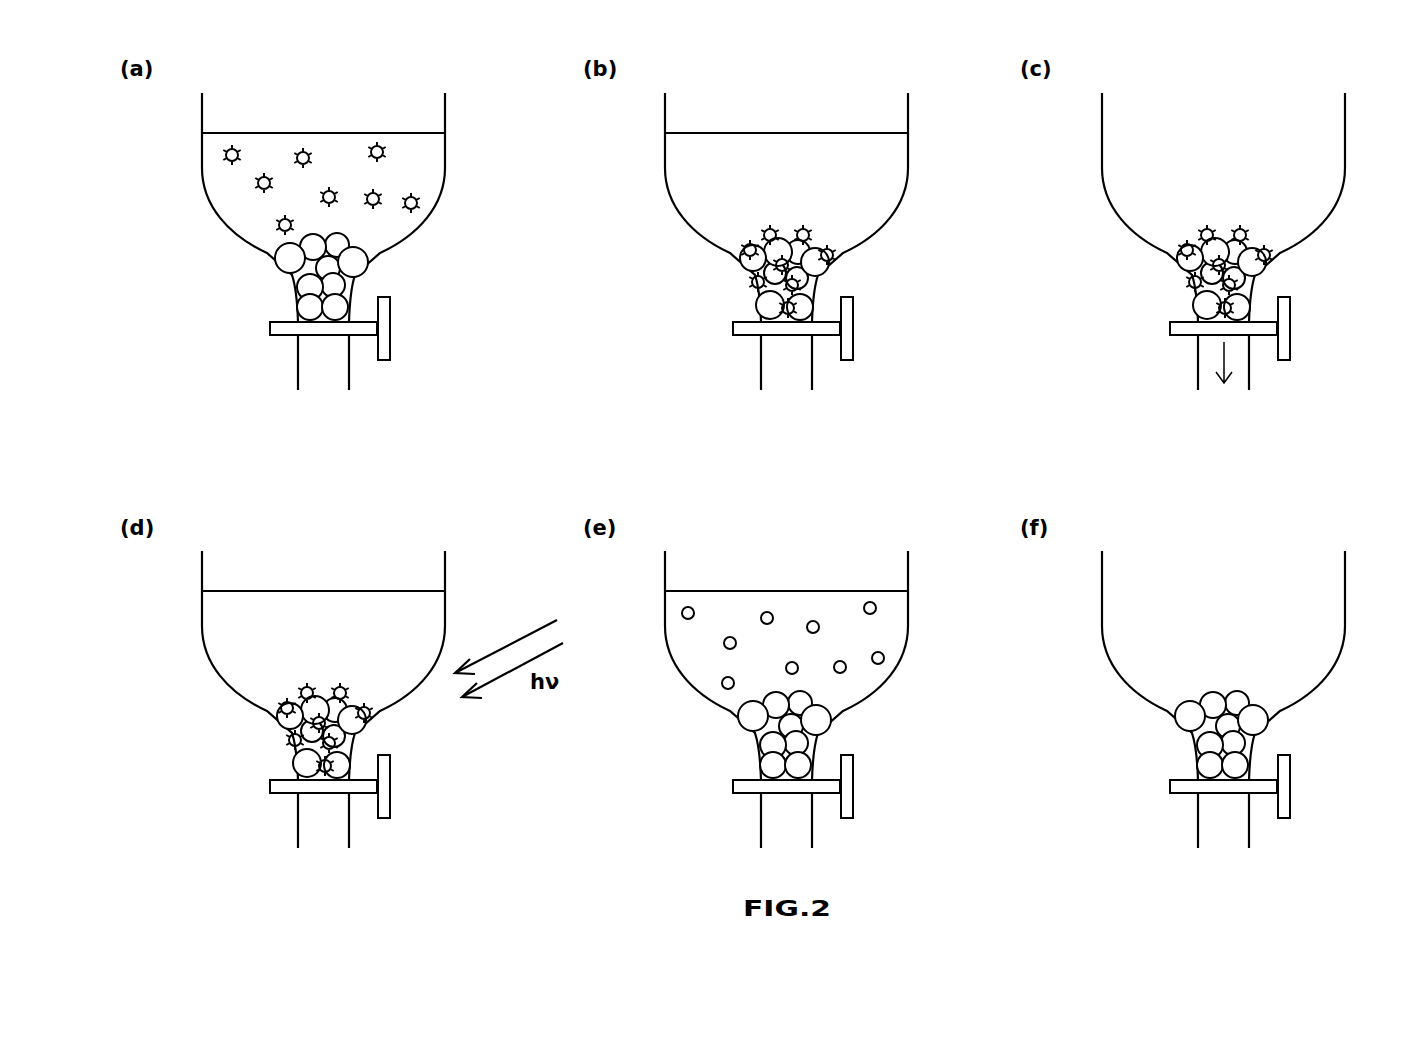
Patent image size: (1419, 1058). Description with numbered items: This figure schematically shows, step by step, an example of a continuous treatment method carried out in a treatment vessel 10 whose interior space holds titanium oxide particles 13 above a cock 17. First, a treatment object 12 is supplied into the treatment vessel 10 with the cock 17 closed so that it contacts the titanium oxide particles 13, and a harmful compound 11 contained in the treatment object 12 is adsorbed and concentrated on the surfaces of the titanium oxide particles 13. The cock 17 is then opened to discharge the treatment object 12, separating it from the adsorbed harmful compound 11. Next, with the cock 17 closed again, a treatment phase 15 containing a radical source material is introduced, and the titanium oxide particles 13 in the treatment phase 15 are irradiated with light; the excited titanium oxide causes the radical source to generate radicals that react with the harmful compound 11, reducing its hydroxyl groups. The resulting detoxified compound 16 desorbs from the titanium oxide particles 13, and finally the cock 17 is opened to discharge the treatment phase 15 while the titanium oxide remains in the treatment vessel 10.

The treatment vessel 10 is at (445, 168).
The harmful compound 11 is at (222, 155).
The treatment object 12 is at (230, 207).
The titanium oxide particles 13 is at (292, 258).
The treatment phase 15 is at (527, 629).
The detoxified compound 16 is at (831, 653).
The cock 17 is at (381, 327).